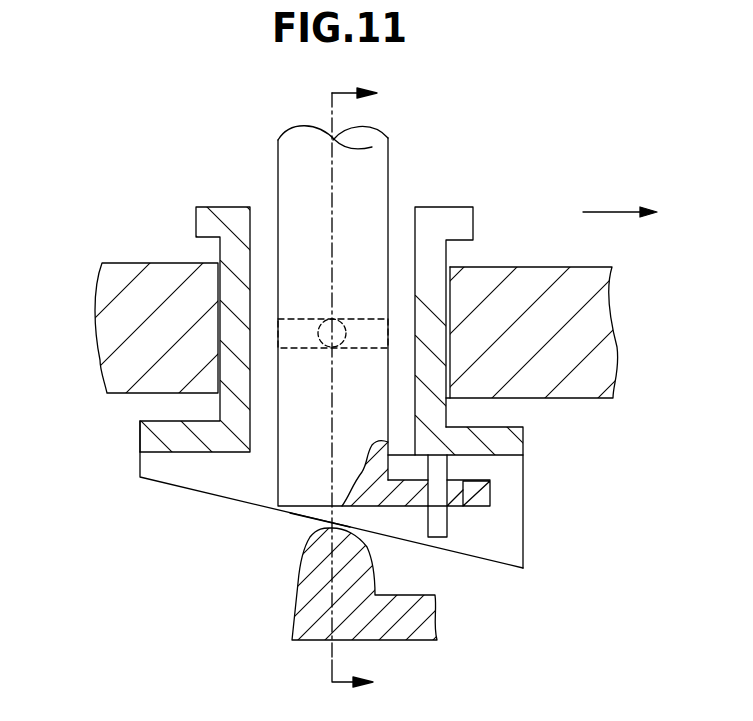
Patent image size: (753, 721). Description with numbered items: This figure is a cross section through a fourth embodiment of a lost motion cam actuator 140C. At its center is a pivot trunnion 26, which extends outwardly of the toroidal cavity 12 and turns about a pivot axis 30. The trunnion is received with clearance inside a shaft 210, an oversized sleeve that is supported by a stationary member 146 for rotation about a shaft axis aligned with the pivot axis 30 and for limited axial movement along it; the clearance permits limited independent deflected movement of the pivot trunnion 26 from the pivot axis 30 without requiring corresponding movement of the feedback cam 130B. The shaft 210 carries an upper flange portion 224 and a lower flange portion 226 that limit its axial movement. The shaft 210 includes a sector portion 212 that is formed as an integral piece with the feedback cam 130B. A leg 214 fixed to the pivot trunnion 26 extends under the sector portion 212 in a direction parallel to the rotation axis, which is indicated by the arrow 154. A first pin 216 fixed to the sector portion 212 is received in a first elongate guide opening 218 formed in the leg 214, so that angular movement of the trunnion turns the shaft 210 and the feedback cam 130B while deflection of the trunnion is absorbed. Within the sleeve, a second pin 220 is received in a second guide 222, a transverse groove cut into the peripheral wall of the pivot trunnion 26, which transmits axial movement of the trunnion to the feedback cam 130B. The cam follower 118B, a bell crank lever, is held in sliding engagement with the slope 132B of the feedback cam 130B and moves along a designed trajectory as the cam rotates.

The toroidal cavity 12 is at (343, 88).
The pivot trunnion 26 is at (372, 147).
The pivot axis 30 is at (278, 167).
The stationary member 146 is at (592, 277).
The arrow 154 is at (613, 212).
The shaft 210 is at (220, 418).
The sector portion 212 is at (462, 460).
The leg 214 is at (483, 495).
The first pin 216 is at (440, 522).
The first elongate guide opening 218 is at (457, 507).
The second pin 220 is at (342, 336).
The second guide 222 is at (363, 348).
The upper flange portion 224 is at (473, 229).
The lower flange portion 226 is at (140, 432).
The slope 132B is at (227, 500).
The cam follower 118B is at (322, 526).
The feedback cam 130B is at (509, 571).
The lost motion cam actuator 140C is at (557, 427).